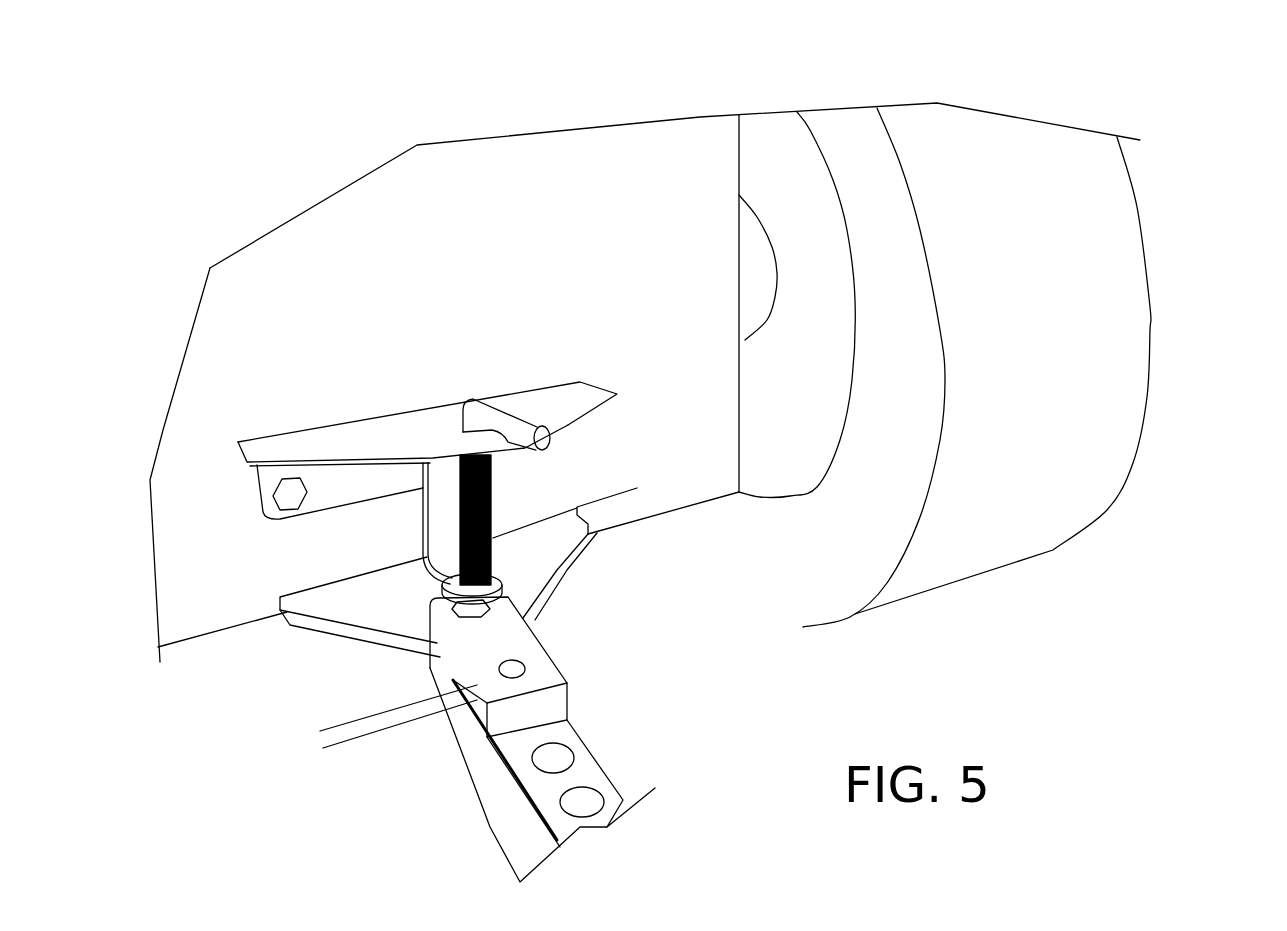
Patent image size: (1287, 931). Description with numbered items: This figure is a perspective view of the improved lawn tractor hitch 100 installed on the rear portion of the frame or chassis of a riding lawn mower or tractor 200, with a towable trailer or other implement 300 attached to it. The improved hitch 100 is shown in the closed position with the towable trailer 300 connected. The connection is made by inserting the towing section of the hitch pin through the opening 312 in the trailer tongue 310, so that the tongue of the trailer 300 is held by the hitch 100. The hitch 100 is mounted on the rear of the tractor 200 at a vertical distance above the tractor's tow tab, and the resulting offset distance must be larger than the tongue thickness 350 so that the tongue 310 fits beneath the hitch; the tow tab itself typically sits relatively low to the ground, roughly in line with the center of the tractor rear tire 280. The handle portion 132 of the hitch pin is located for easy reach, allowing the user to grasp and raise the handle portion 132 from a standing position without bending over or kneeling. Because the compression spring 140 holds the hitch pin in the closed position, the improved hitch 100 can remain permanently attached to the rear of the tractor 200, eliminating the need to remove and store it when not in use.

The improved lawn tractor hitch 100 is at (242, 464).
The handle portion 132 is at (465, 404).
The compression spring 140 is at (425, 562).
The riding lawn mower or tractor 200 is at (747, 170).
The tractor rear tire 280 is at (1087, 218).
The towable trailer 300 is at (628, 772).
The trailer tongue 310 is at (528, 632).
The opening 312 is at (437, 657).
The tongue thickness 350 is at (342, 687).